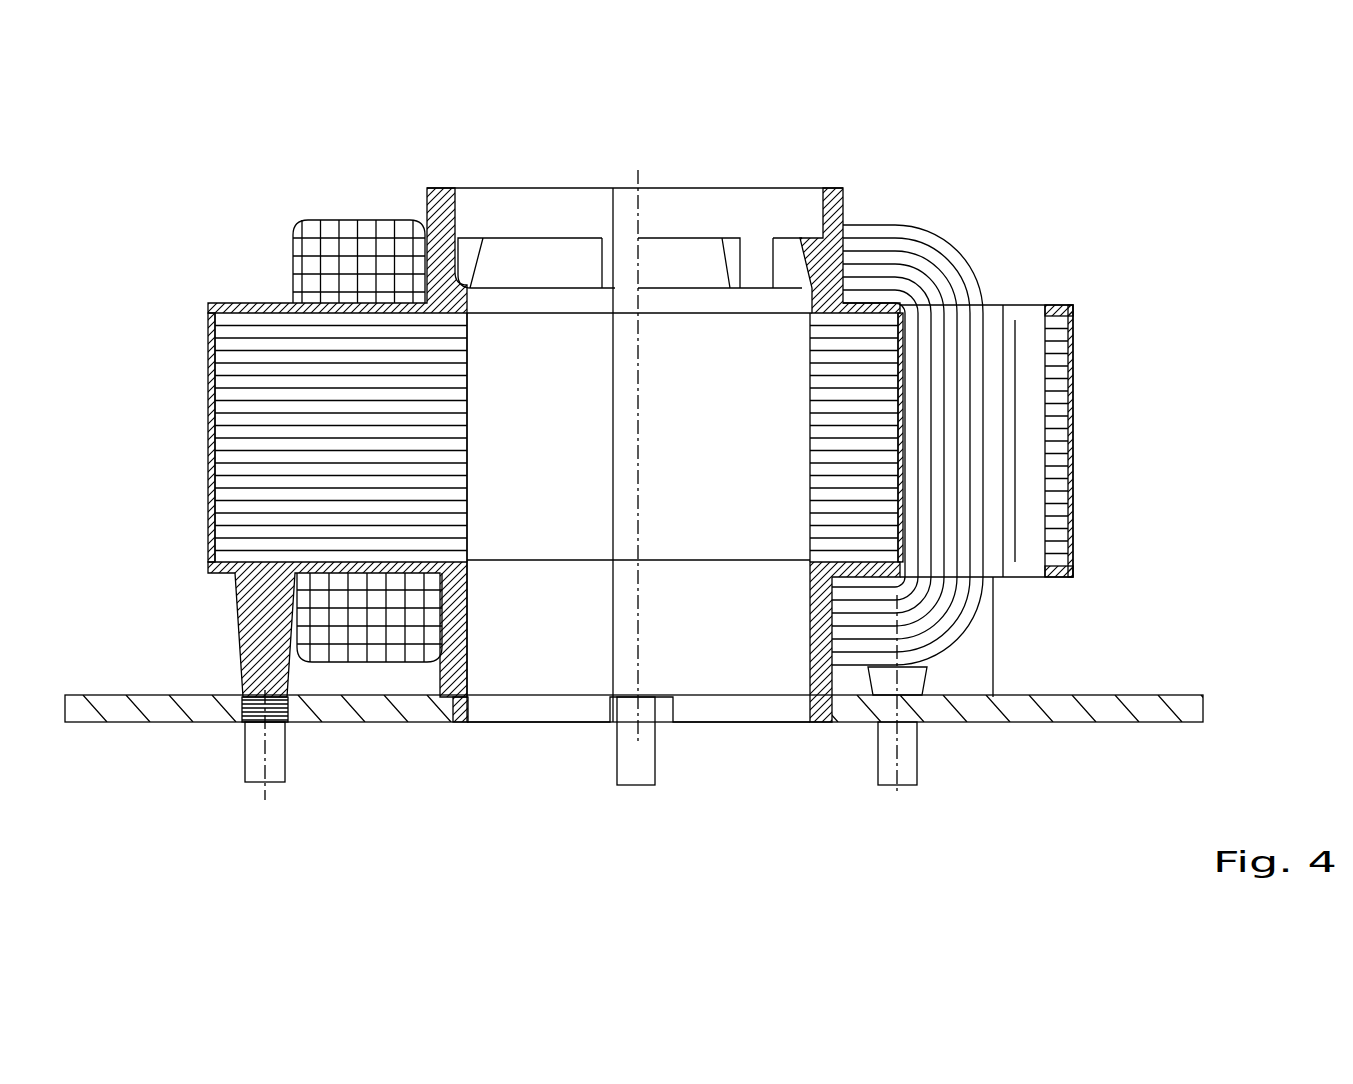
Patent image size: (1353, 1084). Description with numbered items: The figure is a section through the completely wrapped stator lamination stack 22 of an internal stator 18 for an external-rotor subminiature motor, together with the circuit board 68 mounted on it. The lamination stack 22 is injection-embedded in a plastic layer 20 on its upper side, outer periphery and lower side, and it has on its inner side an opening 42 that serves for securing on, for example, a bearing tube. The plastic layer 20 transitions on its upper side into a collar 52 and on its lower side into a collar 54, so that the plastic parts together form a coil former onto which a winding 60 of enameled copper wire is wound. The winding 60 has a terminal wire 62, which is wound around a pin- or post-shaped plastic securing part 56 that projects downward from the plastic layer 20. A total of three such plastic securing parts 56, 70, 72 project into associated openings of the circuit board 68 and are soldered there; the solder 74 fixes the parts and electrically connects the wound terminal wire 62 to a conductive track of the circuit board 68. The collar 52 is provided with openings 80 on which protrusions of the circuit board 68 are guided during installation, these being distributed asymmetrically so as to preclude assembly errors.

The internal stator 18 is at (262, 207).
The plastic layer 20 is at (237, 303).
The stator lamination stack 22 is at (475, 443).
The opening 42 is at (467, 513).
The collar 52 is at (442, 205).
The collar 54 is at (455, 663).
The plastic securing part 56 is at (257, 768).
The winding 60 is at (333, 240).
The terminal wire 62 is at (330, 684).
The circuit board 68 is at (392, 708).
The plastic securing part 70 is at (640, 770).
The plastic securing part 72 is at (903, 770).
The solder 74 is at (241, 724).
The openings 80 is at (453, 710).